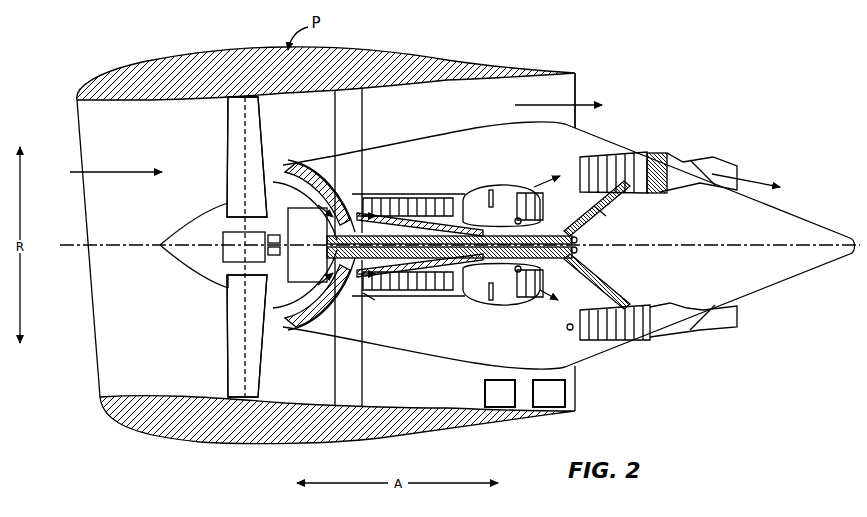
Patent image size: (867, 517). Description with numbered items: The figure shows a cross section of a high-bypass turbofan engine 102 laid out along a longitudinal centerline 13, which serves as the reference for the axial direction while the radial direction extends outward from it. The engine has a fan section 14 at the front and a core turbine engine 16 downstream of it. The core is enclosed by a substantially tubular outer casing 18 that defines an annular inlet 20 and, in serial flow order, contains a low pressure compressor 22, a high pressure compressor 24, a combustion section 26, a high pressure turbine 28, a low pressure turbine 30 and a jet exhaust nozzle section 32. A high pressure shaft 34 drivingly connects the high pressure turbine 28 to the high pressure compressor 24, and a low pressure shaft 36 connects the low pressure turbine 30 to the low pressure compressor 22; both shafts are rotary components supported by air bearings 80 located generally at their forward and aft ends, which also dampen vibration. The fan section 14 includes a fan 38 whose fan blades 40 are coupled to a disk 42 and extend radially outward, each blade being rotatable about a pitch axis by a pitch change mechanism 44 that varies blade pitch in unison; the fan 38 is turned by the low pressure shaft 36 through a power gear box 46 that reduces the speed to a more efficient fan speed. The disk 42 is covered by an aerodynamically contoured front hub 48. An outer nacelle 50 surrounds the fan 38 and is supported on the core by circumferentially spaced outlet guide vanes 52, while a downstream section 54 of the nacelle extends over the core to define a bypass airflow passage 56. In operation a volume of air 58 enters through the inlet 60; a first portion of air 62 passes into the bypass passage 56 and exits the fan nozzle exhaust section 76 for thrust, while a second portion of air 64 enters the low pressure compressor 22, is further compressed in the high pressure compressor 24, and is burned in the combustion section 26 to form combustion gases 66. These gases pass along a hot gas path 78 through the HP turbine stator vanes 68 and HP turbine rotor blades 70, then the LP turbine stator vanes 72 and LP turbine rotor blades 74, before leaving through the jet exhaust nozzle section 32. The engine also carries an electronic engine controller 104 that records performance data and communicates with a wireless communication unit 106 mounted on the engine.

The longitudinal centerline 13 is at (693, 243).
The fan section 14 is at (197, 117).
The core turbine engine 16 is at (443, 157).
The outer casing 18 is at (465, 367).
The annular inlet 20 is at (280, 348).
The low pressure compressor 22 is at (320, 287).
The high pressure compressor 24 is at (387, 305).
The combustion section 26 is at (502, 300).
The high pressure turbine 28 is at (572, 298).
The low pressure turbine 30 is at (637, 347).
The jet exhaust nozzle section 32 is at (680, 327).
The high pressure shaft 34 is at (585, 235).
The low pressure shaft 36 is at (597, 222).
The fan 38 is at (200, 288).
The fan blades 40 is at (227, 353).
The disk 42 is at (240, 213).
The pitch change mechanism 44 is at (223, 237).
The power gear box 46 is at (315, 222).
The front hub 48 is at (170, 255).
The outer nacelle 50 is at (258, 447).
The outlet guide vanes 52 is at (362, 107).
The downstream section of the nacelle 54 is at (547, 103).
The bypass airflow passage 56 is at (471, 109).
The volume of air 58 is at (120, 170).
The inlet 60 is at (100, 397).
The first portion of air 62 is at (230, 133).
The second portion of air 64 is at (280, 167).
The combustion gases 66 is at (607, 150).
The HP turbine stator vanes 68 is at (522, 310).
The HP turbine rotor blades 70 is at (573, 262).
The LP turbine stator vanes 72 is at (567, 327).
The LP turbine rotor blades 74 is at (587, 347).
The fan nozzle exhaust section 76 is at (567, 97).
The hot gas path 78 is at (563, 182).
The air bearings 80 is at (273, 247).
The turbofan engine 102 is at (690, 72).
The electronic engine controller 104 is at (500, 393).
The wireless communication unit 106 is at (549, 393).